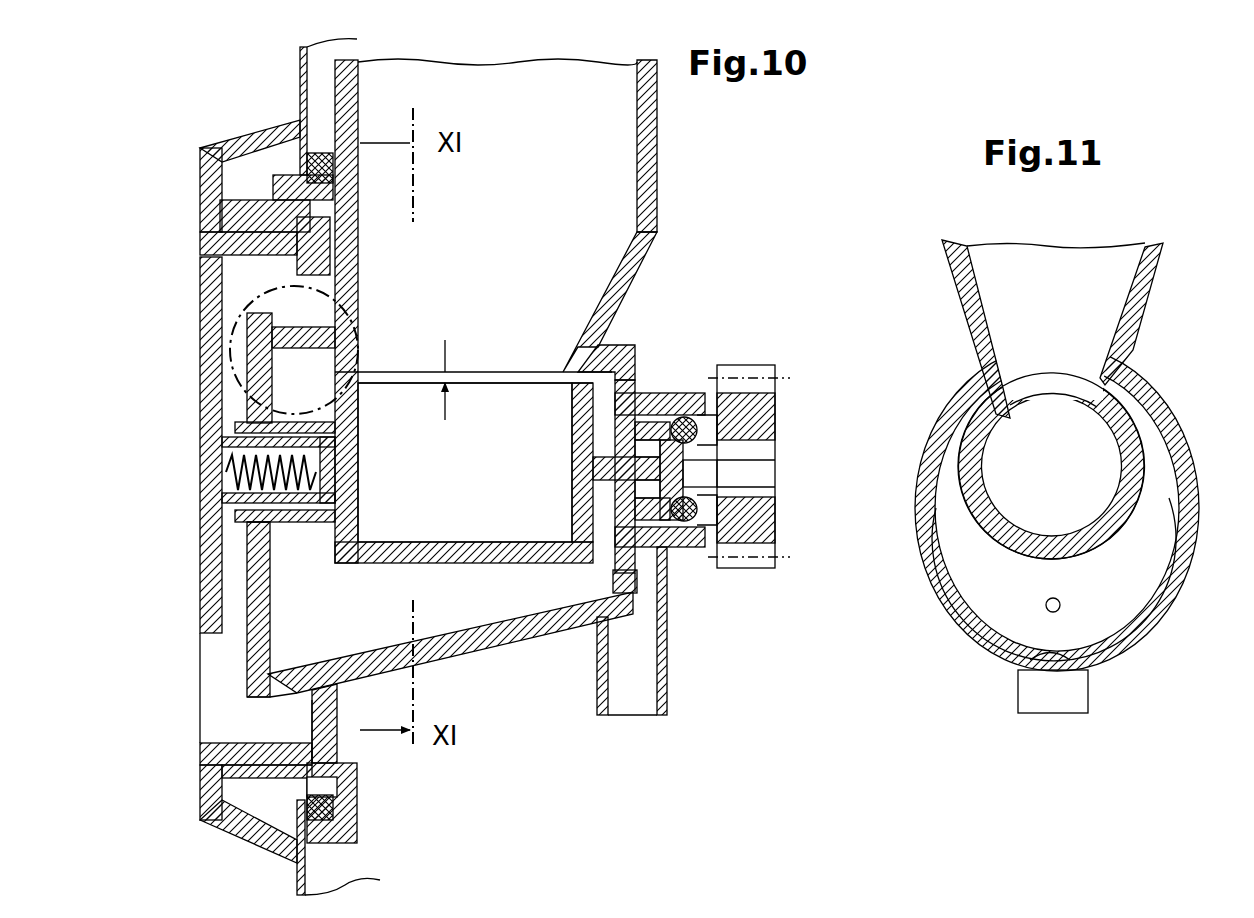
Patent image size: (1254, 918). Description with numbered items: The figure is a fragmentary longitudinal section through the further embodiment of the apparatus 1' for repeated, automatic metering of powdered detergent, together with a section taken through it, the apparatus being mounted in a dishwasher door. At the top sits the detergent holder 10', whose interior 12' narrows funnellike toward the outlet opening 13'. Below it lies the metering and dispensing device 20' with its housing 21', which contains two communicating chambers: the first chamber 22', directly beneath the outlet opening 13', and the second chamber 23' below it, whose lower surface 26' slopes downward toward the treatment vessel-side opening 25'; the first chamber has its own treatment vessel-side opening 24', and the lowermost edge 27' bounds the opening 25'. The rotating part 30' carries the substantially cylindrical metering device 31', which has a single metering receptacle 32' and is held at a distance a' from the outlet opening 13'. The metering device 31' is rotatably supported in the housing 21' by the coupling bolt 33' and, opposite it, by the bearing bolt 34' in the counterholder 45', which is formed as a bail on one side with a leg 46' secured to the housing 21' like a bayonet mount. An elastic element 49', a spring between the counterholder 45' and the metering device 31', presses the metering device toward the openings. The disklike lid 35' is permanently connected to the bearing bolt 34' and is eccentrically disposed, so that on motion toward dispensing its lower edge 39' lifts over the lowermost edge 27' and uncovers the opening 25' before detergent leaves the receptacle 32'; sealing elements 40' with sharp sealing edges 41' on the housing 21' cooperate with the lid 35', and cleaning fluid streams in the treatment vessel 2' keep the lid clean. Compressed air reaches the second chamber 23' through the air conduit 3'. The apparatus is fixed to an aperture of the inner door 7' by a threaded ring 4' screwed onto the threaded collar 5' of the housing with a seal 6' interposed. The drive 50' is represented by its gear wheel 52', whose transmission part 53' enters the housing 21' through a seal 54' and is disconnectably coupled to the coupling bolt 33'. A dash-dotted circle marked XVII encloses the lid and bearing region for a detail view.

In FIG. 10, the apparatus 1' is at (528, 301).
In FIG. 11, the apparatus 1' is at (1087, 293).
In FIG. 10, the detergent holder 10' is at (527, 301).
In FIG. 11, the detergent holder 10' is at (1087, 316).
In FIG. 10, the interior 12' is at (643, 296).
In FIG. 11, the interior 12' is at (1164, 277).
In FIG. 10, the outlet opening 13' is at (473, 344).
In FIG. 11, the outlet opening 13' is at (1053, 359).
In FIG. 10, the distance a' is at (464, 380).
In FIG. 10, the metering and dispensing device 20' is at (652, 438).
In FIG. 11, the metering and dispensing device 20' is at (1079, 491).
In FIG. 10, the housing 21' is at (623, 343).
In FIG. 11, the housing 21' is at (1074, 508).
In FIG. 10, the first chamber 22' is at (660, 452).
In FIG. 11, the first chamber 22' is at (1193, 440).
In FIG. 10, the second chamber 23' is at (450, 644).
In FIG. 11, the second chamber 23' is at (1087, 579).
In FIG. 10, the treatment vessel-side opening 24' is at (340, 352).
In FIG. 10, the treatment vessel-side opening 25' is at (221, 505).
In FIG. 10, the lower surface 26' is at (450, 644).
In FIG. 11, the lower surface 26' is at (1102, 691).
In FIG. 10, the lowermost edge 27' is at (295, 645).
In FIG. 10, the rotating part 30' is at (526, 501).
In FIG. 11, the rotating part 30' is at (1103, 468).
In FIG. 10, the metering device 31' is at (464, 569).
In FIG. 11, the metering device 31' is at (1101, 466).
In FIG. 10, the metering receptacle 32' is at (555, 423).
In FIG. 11, the metering receptacle 32' is at (1164, 548).
In FIG. 10, the coupling bolt 33' is at (614, 480).
In FIG. 10, the bearing bolt 34' is at (237, 468).
In FIG. 10, the lid 35' is at (207, 541).
In FIG. 10, the lower edge 39' is at (207, 707).
In FIG. 10, the sealing element 40' is at (228, 731).
In FIG. 10, the sealing edge 41' is at (450, 642).
In FIG. 10, the counterholder 45' is at (181, 445).
In FIG. 10, the leg 46' is at (235, 246).
In FIG. 10, the elastic element 49' is at (237, 470).
In FIG. 10, the drive 50' is at (771, 428).
In FIG. 10, the gear wheel 52' is at (774, 468).
In FIG. 10, the transmission part 53' is at (775, 470).
In FIG. 10, the seal 54' is at (694, 501).
In FIG. 10, the treatment vessel 2' is at (154, 688).
In FIG. 10, the air conduit 3' is at (637, 631).
In FIG. 11, the air conduit 3' is at (1039, 662).
In FIG. 10, the threaded ring 4' is at (220, 491).
In FIG. 10, the threaded collar 5' is at (298, 476).
In FIG. 10, the seal 6' is at (351, 498).
In FIG. 10, the inner door 7' is at (312, 471).
In FIG. 10, the detail circle XVII is at (240, 305).